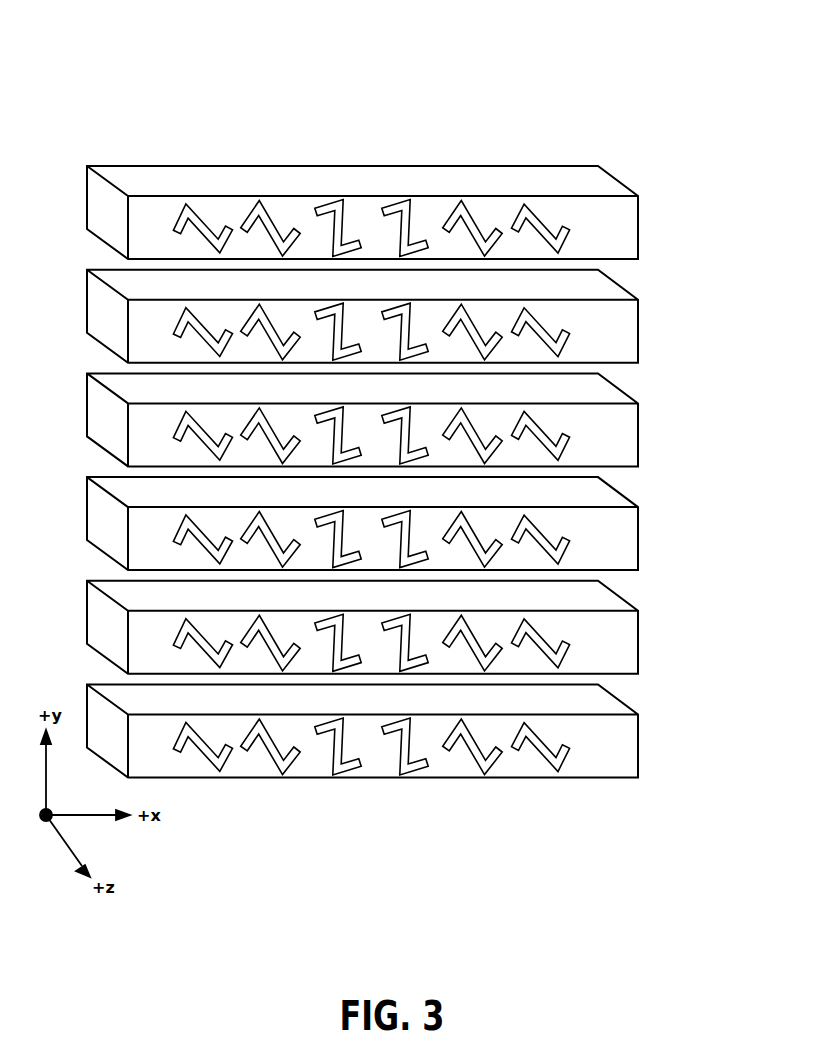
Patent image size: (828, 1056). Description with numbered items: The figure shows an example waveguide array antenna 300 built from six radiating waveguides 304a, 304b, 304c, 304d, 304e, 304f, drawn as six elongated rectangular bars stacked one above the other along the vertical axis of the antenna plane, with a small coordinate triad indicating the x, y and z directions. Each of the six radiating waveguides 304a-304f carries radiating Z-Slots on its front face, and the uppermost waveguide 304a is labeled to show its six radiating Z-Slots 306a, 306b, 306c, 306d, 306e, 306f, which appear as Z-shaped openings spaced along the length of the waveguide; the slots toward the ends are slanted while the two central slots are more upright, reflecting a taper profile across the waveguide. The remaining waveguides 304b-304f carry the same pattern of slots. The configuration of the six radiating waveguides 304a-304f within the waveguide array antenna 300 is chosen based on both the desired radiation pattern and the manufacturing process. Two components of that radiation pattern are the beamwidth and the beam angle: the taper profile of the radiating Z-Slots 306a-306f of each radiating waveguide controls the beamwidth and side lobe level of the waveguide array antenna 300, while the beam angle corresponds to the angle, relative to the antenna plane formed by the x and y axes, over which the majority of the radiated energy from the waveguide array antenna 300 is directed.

The waveguide array antenna 300 is at (106, 59).
The radiating waveguide 304a is at (393, 199).
The radiating waveguide 304b is at (393, 316).
The radiating waveguide 304c is at (393, 419).
The radiating waveguide 304d is at (393, 523).
The radiating waveguide 304e is at (393, 627).
The radiating waveguide 304f is at (394, 731).
The radiating Z-Slot 306a is at (201, 218).
The radiating Z-Slot 306b is at (270, 218).
The radiating Z-Slot 306c is at (320, 207).
The radiating Z-Slot 306d is at (388, 205).
The radiating Z-Slot 306e is at (473, 219).
The radiating Z-Slot 306f is at (538, 219).